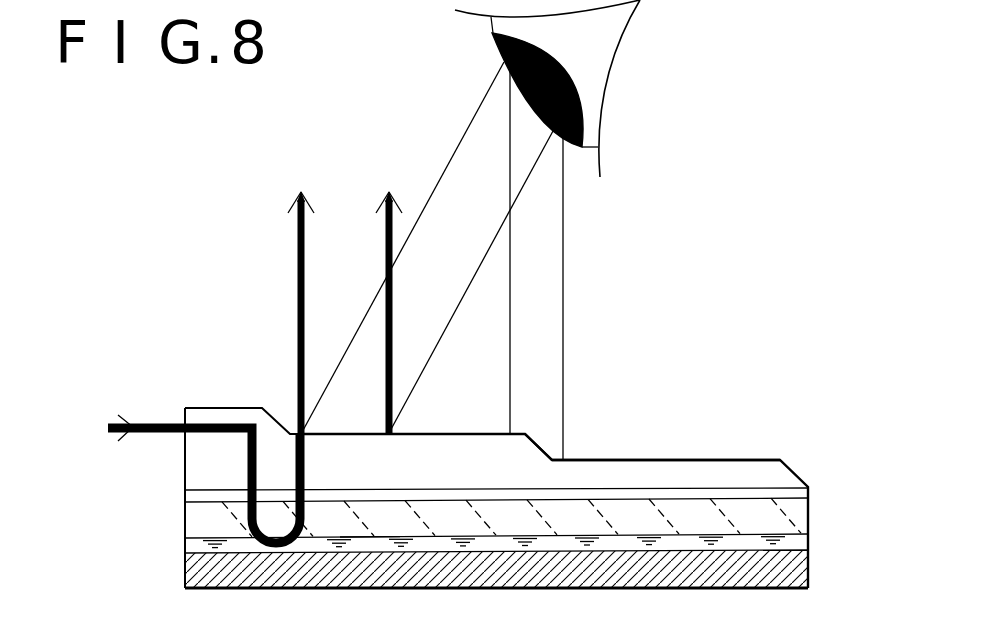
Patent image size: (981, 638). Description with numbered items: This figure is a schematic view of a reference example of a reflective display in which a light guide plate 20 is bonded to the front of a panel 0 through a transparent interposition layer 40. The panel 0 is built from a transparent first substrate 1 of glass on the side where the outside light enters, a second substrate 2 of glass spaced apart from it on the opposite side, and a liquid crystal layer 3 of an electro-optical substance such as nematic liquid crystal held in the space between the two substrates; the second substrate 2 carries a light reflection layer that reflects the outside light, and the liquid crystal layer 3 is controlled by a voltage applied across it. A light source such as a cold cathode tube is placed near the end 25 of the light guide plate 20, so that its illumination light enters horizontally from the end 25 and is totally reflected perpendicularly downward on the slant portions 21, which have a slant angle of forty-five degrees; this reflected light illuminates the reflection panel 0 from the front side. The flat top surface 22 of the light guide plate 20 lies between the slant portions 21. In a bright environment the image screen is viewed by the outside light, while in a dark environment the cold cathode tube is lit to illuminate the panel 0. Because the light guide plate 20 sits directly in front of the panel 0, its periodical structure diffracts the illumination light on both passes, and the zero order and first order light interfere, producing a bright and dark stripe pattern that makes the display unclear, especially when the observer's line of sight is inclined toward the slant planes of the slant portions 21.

The light guide plate 20 is at (797, 466).
The slant portions 21 is at (548, 446).
The top surface of light guide plate 22 is at (714, 458).
The end of the light guide plate 25 is at (184, 470).
The transparent interposition layer 40 is at (808, 490).
The first substrate 1 is at (193, 515).
The panel 0 is at (811, 549).
The second substrate 2 is at (190, 572).
The liquid crystal layer 3 is at (370, 545).